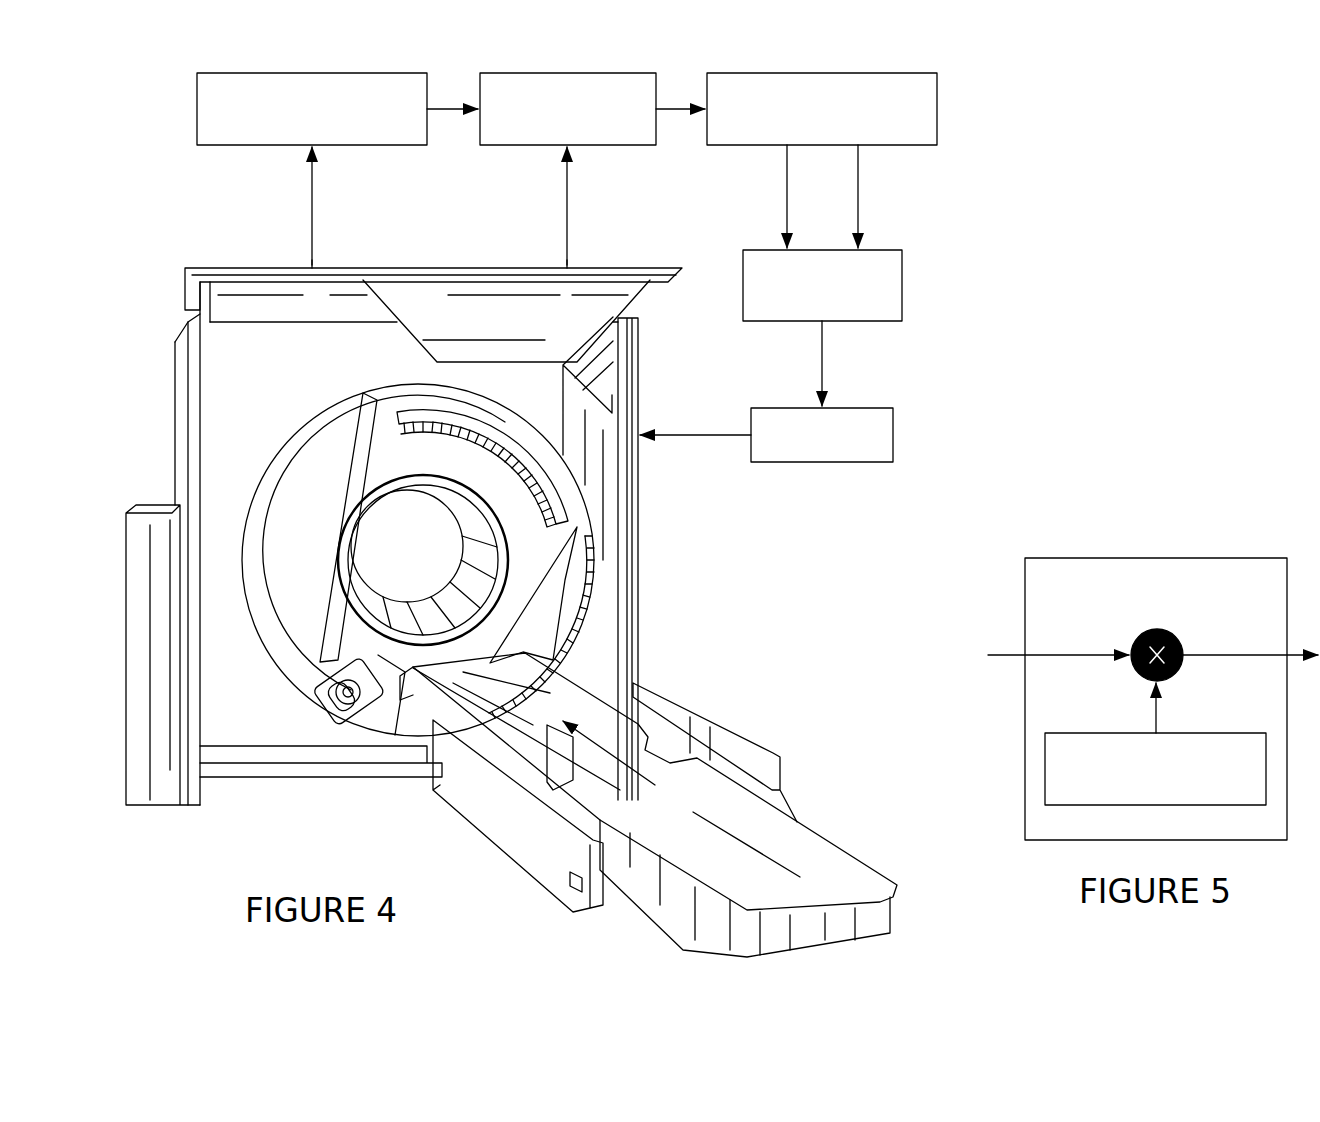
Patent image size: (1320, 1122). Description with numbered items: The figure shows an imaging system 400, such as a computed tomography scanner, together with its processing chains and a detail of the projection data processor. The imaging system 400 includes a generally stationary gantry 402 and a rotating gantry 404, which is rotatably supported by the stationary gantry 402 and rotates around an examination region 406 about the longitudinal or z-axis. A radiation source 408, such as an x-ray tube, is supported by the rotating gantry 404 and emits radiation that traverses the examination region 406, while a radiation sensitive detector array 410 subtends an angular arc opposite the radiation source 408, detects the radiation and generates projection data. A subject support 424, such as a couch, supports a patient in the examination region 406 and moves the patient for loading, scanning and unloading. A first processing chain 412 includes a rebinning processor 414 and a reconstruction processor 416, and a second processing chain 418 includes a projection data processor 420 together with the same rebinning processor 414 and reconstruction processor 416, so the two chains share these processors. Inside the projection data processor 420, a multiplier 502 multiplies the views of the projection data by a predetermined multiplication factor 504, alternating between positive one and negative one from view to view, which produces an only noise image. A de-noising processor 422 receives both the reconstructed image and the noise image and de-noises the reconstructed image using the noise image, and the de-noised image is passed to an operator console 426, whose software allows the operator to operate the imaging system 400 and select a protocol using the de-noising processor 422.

In FIG. 4, the imaging system 400 is at (782, 592).
In FIG. 4, the stationary gantry 402 is at (192, 400).
In FIG. 4, the rotating gantry 404 is at (380, 460).
In FIG. 4, the examination region 406 is at (424, 567).
In FIG. 4, the radiation source 408 is at (348, 694).
In FIG. 4, the detector array 410 is at (538, 482).
In FIG. 4, the first processing chain 412 is at (512, 163).
In FIG. 4, the rebinning processor 414 is at (573, 73).
In FIG. 4, the reconstruction processor 416 is at (938, 110).
In FIG. 4, the second processing chain 418 is at (232, 62).
In FIG. 4, the projection data processor 420 is at (318, 73).
In FIG. 5, the projection data processor 420 is at (1158, 558).
In FIG. 4, the de-noising processor 422 is at (903, 292).
In FIG. 4, the subject support 424 is at (826, 862).
In FIG. 4, the console 426 is at (894, 440).
In FIG. 5, the multiplier 502 is at (1175, 672).
In FIG. 5, the multiplication factor 504 is at (1155, 805).